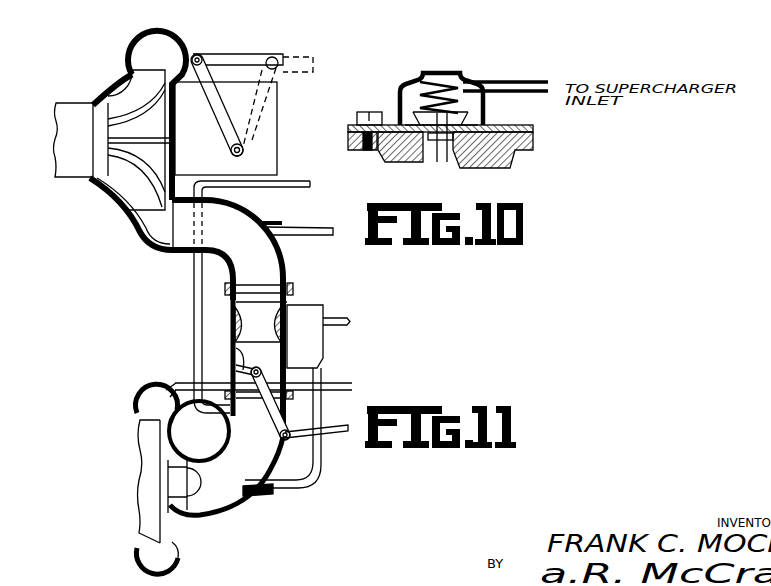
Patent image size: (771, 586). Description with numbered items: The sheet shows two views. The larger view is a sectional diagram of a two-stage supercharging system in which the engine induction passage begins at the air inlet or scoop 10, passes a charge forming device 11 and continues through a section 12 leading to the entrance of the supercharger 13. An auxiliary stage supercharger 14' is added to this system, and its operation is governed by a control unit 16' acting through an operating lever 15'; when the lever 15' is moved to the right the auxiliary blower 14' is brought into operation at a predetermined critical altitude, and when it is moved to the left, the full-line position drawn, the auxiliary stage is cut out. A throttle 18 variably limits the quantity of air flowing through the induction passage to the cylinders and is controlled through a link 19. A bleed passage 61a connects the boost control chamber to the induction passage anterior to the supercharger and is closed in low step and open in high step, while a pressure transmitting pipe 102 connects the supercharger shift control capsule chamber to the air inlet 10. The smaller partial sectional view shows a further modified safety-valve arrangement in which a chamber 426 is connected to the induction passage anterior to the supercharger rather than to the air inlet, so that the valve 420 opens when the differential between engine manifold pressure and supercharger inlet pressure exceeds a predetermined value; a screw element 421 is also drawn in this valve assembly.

In FIG. 11, the air inlet or scoop 10 is at (223, 243).
In FIG. 11, the charge forming device 11 is at (312, 343).
In FIG. 11, the section 12 is at (228, 485).
In FIG. 11, the supercharger 13 is at (165, 512).
In FIG. 11, the auxiliary stage supercharger 14' is at (120, 142).
In FIG. 11, the operating lever 15' is at (245, 105).
In FIG. 11, the control unit 16' is at (248, 128).
In FIG. 11, the throttle 18 is at (232, 347).
In FIG. 11, the link 19 is at (347, 432).
In FIG. 11, the bleed passage 61a is at (310, 185).
In FIG. 11, the pressure transmitting pipe 102 is at (322, 237).
In FIG. 10, the valve 420 is at (435, 153).
In FIG. 10, the screw 421 is at (397, 107).
In FIG. 10, the chamber 426 is at (410, 100).